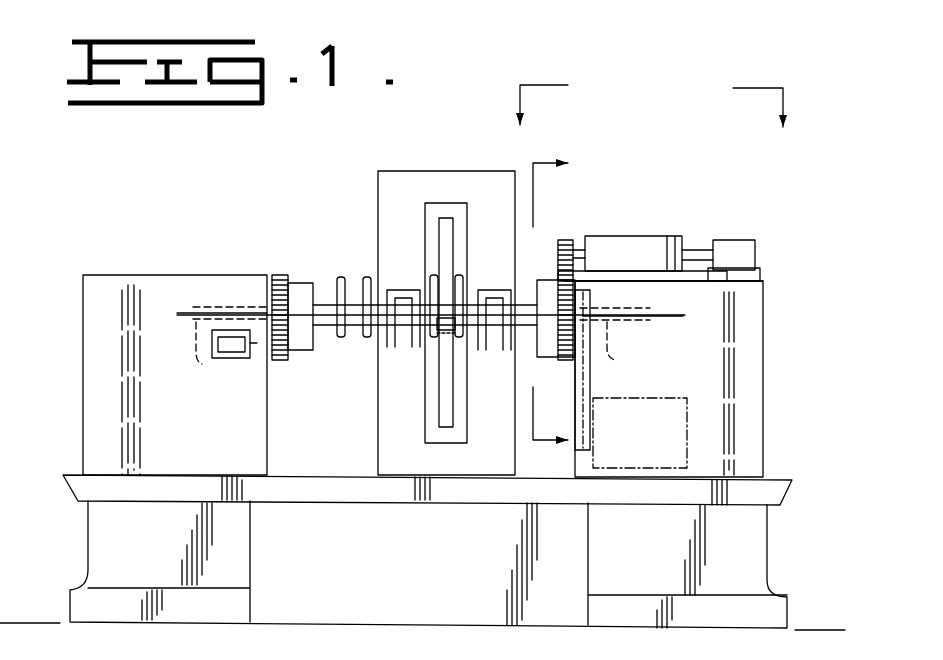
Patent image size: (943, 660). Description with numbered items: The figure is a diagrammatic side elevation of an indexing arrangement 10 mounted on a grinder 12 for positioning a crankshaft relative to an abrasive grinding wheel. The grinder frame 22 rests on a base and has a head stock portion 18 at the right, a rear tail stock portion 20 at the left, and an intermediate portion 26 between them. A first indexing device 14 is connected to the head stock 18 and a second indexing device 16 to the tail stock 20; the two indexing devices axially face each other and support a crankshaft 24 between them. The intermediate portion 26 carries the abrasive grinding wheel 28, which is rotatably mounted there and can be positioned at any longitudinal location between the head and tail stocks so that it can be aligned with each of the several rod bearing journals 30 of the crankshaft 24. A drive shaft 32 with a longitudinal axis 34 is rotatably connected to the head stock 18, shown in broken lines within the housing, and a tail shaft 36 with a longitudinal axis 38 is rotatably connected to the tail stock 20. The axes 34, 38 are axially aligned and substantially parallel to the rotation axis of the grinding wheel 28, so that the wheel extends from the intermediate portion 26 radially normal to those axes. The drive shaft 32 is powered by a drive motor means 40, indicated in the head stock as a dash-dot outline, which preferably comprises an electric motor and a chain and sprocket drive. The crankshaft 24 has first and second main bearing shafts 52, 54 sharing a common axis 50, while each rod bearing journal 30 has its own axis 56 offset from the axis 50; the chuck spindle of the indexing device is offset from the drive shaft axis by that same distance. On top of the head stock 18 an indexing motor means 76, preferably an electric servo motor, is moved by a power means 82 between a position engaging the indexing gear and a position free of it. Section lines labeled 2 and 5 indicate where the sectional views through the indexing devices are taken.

The indexing arrangement 10 is at (230, 177).
The grinder 12 is at (778, 347).
The first indexing device 14 is at (604, 212).
The second indexing device 16 is at (296, 270).
The head stock portion 18 is at (766, 300).
The tail stock portion 20 is at (83, 328).
The grinder frame 22 is at (770, 545).
The crankshaft 24 is at (366, 278).
The intermediate portion 26 is at (383, 188).
The abrasive grinding wheel 28 is at (445, 232).
The rod bearing journals 30 is at (368, 340).
The drive shaft 32 is at (612, 352).
The longitudinal axis of drive shaft 34 is at (668, 318).
The tail shaft 36 is at (200, 362).
The longitudinal axis of tail shaft 38 is at (182, 313).
The drive motor means 40 is at (700, 437).
The axis of main bearing shafts 50 is at (314, 340).
The first main bearing shaft 52 is at (537, 300).
The second main bearing shaft 54 is at (290, 288).
The axis of rod bearing journal 56 is at (425, 348).
The indexing motor means 76 is at (680, 230).
The power means 82 is at (760, 255).
The section line 2- 2 is at (545, 309).
The section line 5- 5 is at (651, 98).